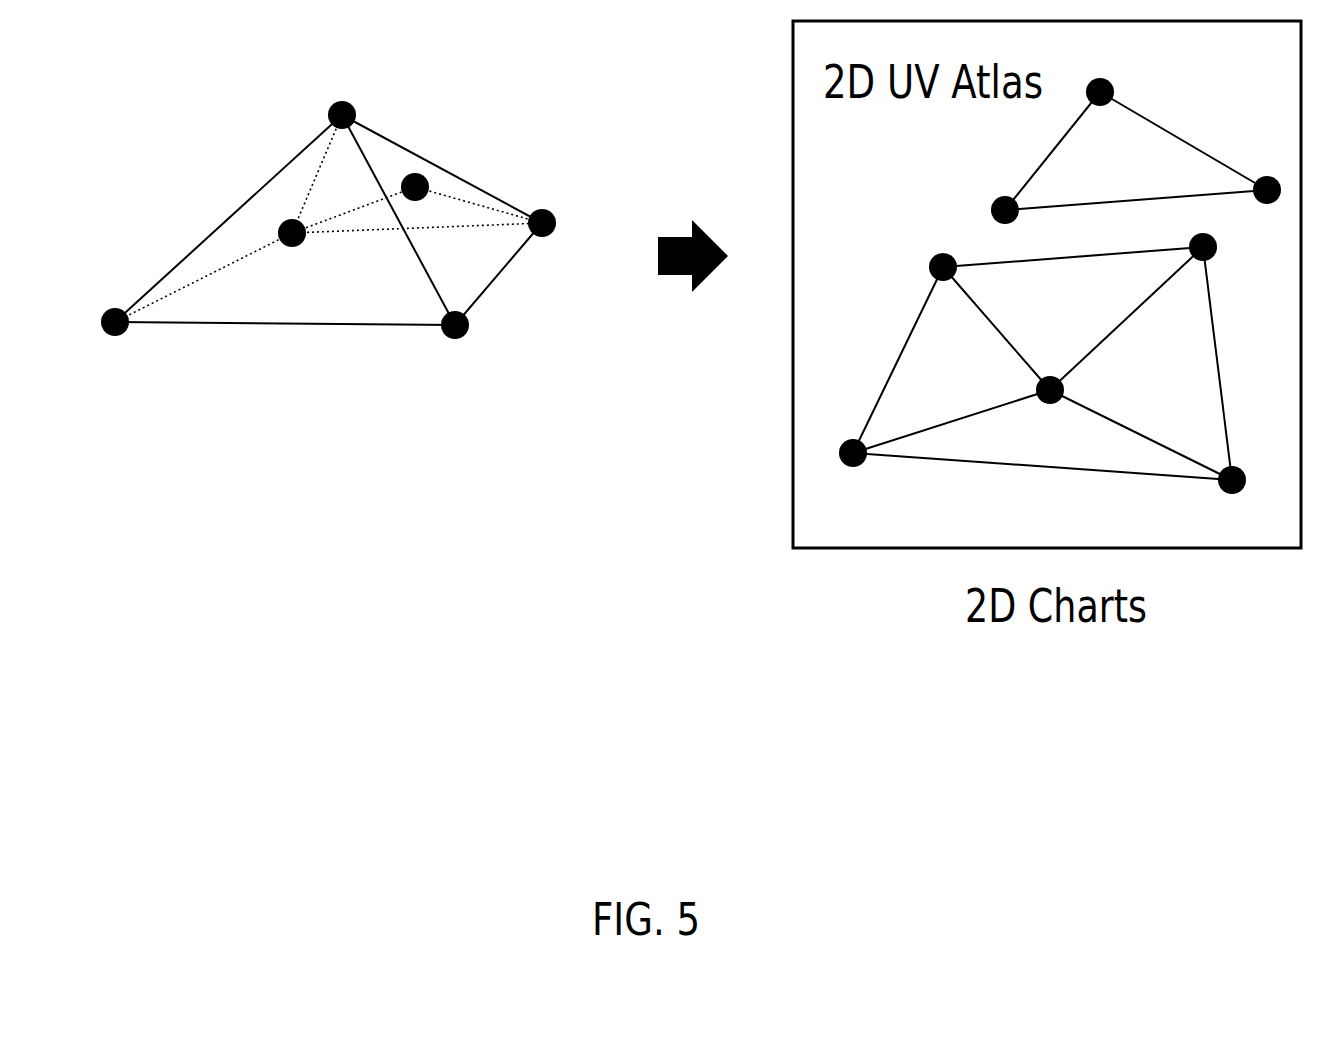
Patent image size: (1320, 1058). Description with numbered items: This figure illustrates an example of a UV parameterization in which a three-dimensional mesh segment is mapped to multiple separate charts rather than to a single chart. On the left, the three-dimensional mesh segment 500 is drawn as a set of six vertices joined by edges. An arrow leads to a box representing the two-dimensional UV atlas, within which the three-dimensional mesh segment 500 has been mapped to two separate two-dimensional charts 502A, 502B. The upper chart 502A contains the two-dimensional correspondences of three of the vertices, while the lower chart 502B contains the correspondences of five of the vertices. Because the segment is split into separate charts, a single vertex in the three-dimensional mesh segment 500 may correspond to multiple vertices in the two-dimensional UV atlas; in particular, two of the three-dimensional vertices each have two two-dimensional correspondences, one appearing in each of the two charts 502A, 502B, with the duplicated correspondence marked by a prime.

The 3D mesh segment 500 is at (412, 149).
The 2D chart 502A is at (1070, 125).
The 2D chart 502B is at (902, 352).